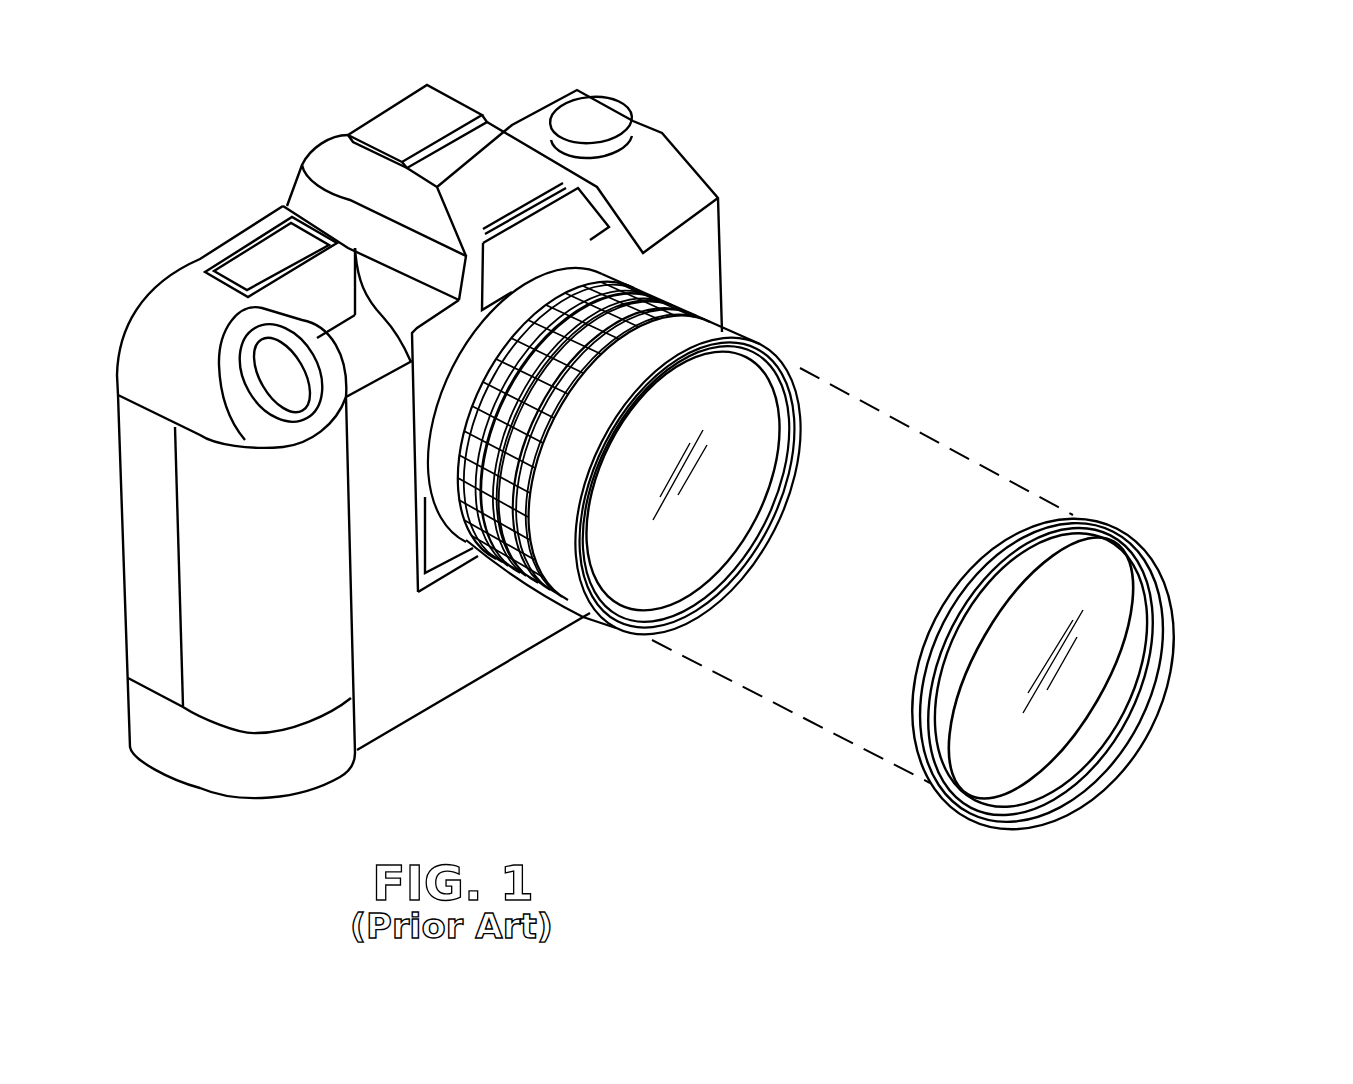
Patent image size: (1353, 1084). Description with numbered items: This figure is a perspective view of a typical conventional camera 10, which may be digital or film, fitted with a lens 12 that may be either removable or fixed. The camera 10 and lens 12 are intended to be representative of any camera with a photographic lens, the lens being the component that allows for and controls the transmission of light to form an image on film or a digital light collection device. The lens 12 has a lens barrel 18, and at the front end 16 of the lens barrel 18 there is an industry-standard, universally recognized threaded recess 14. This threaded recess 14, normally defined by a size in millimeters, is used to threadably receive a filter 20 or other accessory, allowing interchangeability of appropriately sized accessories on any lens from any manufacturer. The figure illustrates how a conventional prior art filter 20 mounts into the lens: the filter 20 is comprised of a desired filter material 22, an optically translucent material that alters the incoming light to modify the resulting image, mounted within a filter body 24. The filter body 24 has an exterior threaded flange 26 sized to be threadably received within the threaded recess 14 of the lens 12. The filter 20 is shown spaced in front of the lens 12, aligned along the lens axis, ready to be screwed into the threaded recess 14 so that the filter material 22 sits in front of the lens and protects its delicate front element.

The camera 10 is at (765, 158).
The lens 12 is at (828, 353).
The threaded recess 14 is at (720, 602).
The front end 16 is at (806, 452).
The lens barrel 18 is at (724, 334).
The filter 20 is at (1178, 534).
The filter material 22 is at (1090, 647).
The filter body 24 is at (1097, 766).
The exterior threaded flange 26 is at (975, 568).